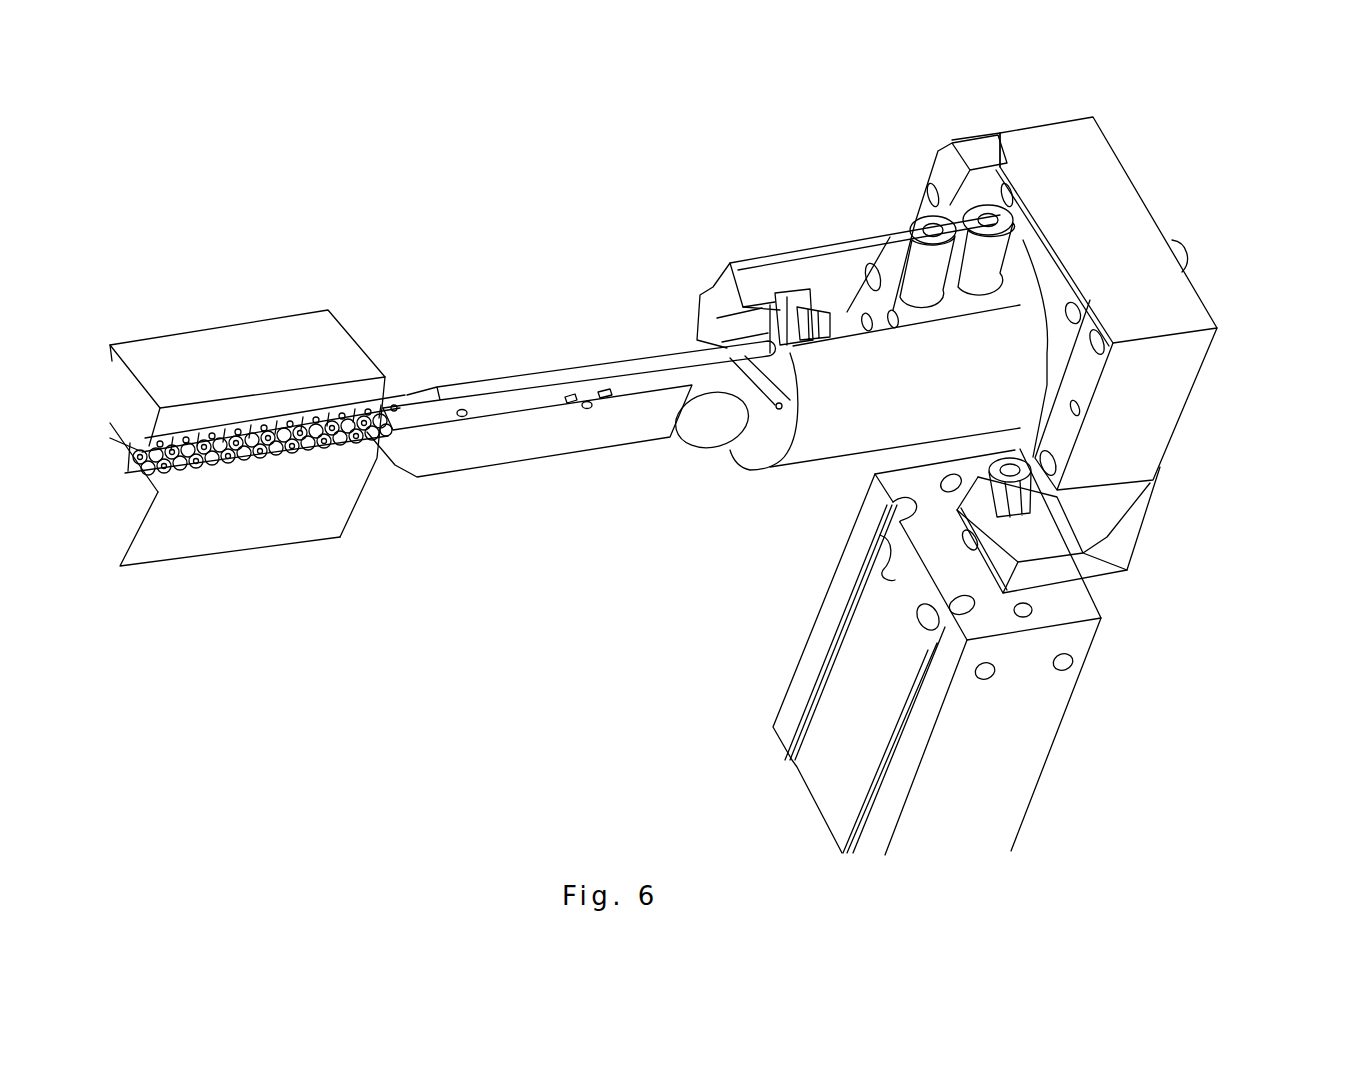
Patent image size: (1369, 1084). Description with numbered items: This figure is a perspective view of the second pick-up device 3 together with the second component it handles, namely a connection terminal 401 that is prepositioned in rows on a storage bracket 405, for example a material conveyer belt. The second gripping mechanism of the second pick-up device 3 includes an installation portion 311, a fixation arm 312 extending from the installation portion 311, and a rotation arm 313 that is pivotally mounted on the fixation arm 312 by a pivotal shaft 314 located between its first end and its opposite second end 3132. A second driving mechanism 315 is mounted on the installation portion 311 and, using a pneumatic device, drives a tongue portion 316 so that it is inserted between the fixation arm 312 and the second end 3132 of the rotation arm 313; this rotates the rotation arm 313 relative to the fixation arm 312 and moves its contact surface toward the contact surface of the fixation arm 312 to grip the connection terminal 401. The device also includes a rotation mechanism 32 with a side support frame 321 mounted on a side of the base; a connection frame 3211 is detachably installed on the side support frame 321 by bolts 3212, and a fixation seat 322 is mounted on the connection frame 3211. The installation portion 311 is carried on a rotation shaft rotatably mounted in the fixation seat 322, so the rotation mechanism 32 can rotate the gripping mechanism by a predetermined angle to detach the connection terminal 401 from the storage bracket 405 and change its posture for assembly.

The second pick-up device 3 is at (532, 298).
The installation portion 311 is at (827, 263).
The fixation arm 312 is at (613, 435).
The rotation arm 313 is at (592, 367).
The second end 3132 is at (718, 363).
The pivotal shaft 314 is at (588, 409).
The second driving mechanism 315 is at (890, 253).
The tongue portion 316 is at (723, 320).
The rotation mechanism 32 is at (1182, 255).
The side support frame 321 is at (1027, 738).
The fixation seat 322 is at (1088, 142).
The connection frame 3211 is at (1122, 545).
The bolts 3212 is at (1016, 506).
The connection terminal 401 is at (233, 455).
The storage bracket 405 is at (213, 360).